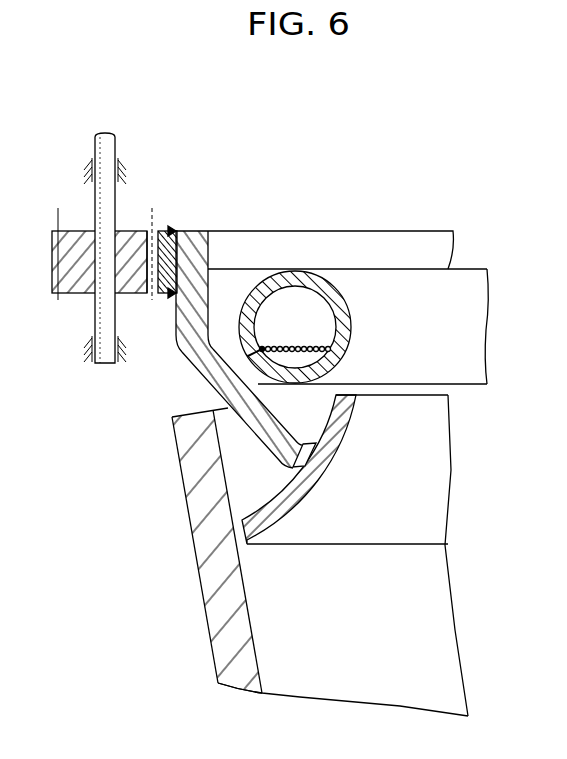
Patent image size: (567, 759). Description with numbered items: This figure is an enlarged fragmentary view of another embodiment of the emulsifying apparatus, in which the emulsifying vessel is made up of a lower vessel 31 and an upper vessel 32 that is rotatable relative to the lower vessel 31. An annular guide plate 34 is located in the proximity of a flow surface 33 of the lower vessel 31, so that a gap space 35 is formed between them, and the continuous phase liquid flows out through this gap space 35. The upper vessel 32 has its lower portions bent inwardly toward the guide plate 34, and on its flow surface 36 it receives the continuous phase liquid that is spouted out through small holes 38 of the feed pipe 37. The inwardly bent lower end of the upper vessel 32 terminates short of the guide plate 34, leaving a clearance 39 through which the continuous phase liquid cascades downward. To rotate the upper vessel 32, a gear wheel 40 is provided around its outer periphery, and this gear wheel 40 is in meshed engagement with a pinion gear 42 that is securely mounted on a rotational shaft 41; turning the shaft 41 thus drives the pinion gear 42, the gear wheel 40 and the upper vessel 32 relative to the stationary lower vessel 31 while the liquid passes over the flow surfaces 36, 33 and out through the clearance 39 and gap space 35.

The lower vessel 31 is at (205, 525).
The upper vessel 32 is at (208, 265).
The flow surface 33 is at (264, 622).
The annular guide plate 34 is at (268, 488).
The gap space 35 is at (238, 550).
The flow surface 36 is at (216, 351).
The feed pipe 37 is at (437, 298).
The small holes 38 is at (262, 349).
The clearance 39 is at (308, 457).
The gear wheel 40 is at (164, 231).
The rotational shaft 41 is at (98, 147).
The pinion gear 42 is at (75, 296).